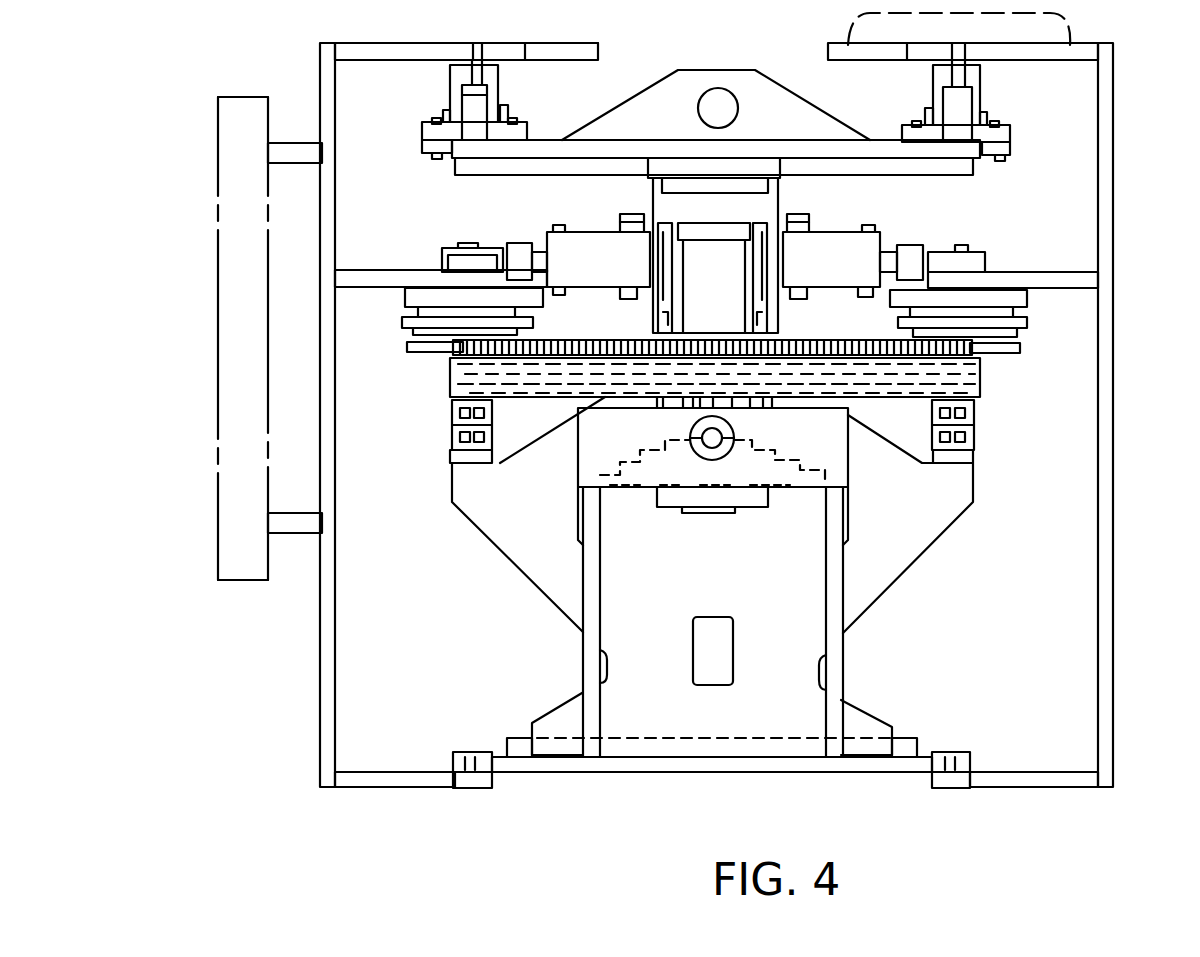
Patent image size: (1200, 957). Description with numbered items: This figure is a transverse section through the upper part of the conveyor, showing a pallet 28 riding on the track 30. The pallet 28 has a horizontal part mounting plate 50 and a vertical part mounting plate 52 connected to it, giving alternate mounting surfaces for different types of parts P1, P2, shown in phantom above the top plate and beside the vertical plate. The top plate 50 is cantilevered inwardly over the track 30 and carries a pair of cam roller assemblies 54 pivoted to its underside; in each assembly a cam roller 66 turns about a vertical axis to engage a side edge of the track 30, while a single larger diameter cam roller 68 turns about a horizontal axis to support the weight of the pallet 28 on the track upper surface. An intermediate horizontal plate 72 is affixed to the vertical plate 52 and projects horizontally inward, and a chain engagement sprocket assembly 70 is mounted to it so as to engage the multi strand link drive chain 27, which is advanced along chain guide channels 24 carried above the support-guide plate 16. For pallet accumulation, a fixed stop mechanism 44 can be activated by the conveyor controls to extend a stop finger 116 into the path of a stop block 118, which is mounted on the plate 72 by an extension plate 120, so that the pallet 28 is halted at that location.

The support-guide plate 16 is at (528, 775).
The chain guide channel 24 is at (905, 400).
The multi strand link drive chain 27 is at (575, 338).
The pallet 28 is at (320, 69).
The track 30 is at (470, 150).
The stop mechanism 44 is at (612, 198).
The horizontal part mounting plate 50 is at (356, 43).
The vertical part mounting plate 52 is at (325, 652).
The cam roller assembly 54 is at (450, 93).
The cam roller 66 is at (425, 143).
The larger diameter cam roller 68 is at (508, 100).
The chain engagement sprocket assembly 70 is at (398, 313).
The intermediate horizontal plate 72 is at (353, 270).
The stop finger 116 is at (503, 258).
The stop block 118 is at (520, 243).
The extension plate 120 is at (985, 262).
The part P1 is at (850, 43).
The part P2 is at (218, 405).